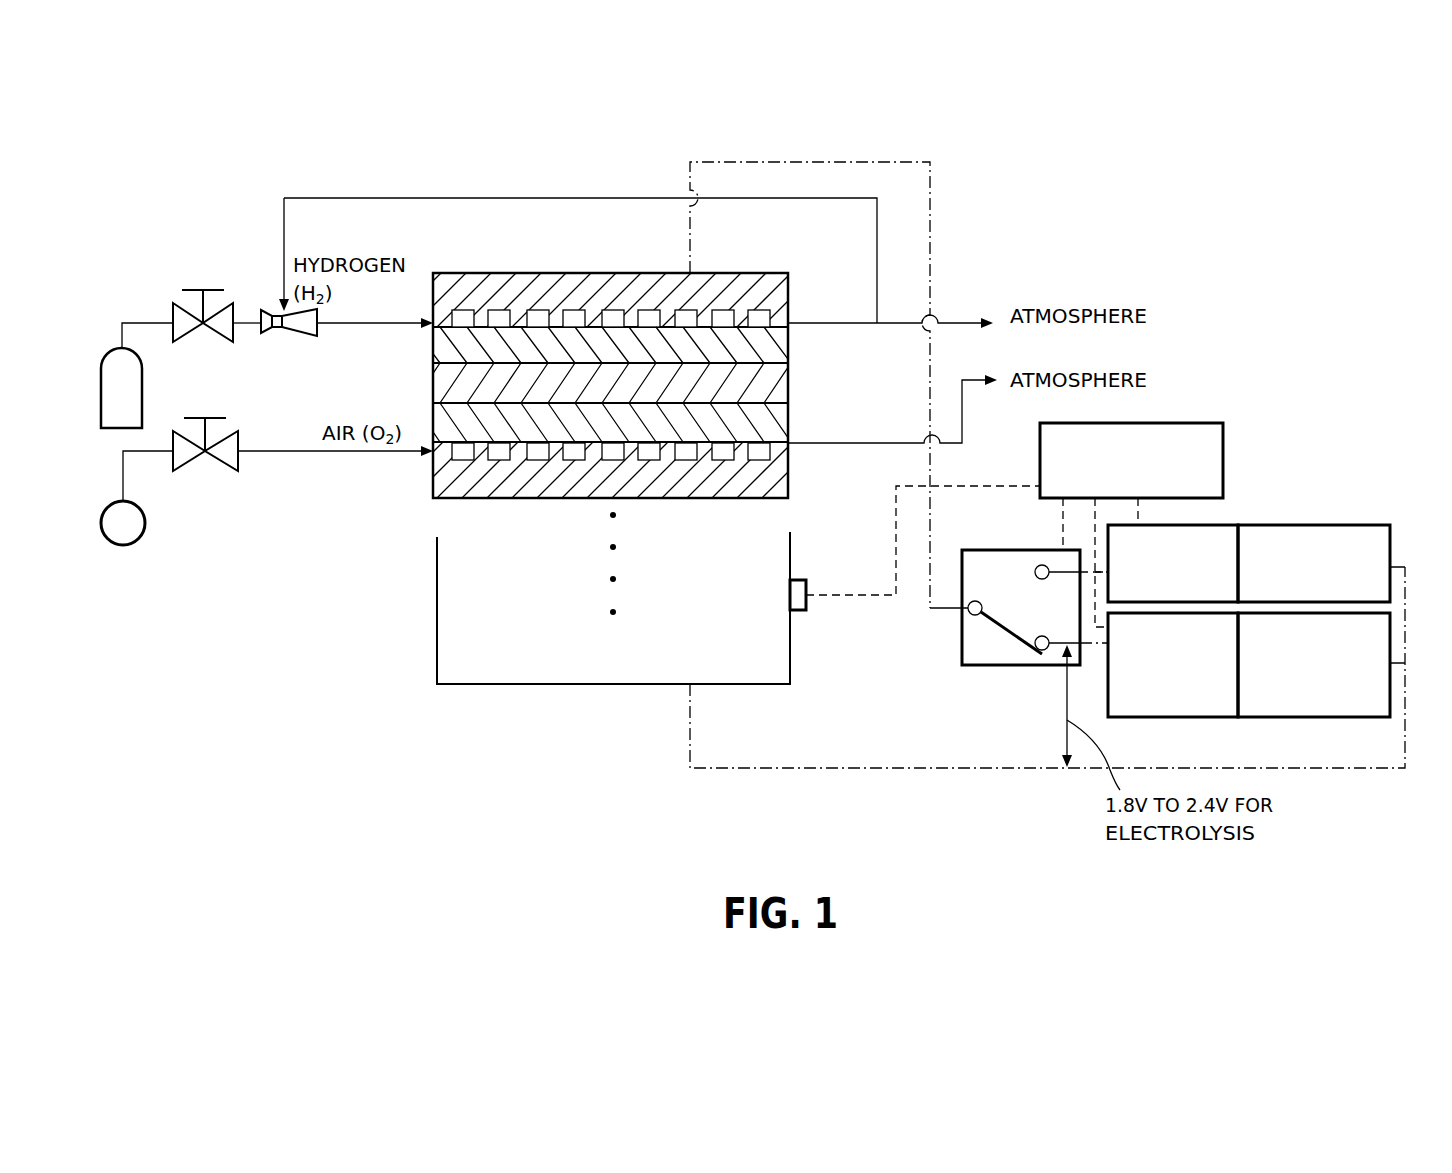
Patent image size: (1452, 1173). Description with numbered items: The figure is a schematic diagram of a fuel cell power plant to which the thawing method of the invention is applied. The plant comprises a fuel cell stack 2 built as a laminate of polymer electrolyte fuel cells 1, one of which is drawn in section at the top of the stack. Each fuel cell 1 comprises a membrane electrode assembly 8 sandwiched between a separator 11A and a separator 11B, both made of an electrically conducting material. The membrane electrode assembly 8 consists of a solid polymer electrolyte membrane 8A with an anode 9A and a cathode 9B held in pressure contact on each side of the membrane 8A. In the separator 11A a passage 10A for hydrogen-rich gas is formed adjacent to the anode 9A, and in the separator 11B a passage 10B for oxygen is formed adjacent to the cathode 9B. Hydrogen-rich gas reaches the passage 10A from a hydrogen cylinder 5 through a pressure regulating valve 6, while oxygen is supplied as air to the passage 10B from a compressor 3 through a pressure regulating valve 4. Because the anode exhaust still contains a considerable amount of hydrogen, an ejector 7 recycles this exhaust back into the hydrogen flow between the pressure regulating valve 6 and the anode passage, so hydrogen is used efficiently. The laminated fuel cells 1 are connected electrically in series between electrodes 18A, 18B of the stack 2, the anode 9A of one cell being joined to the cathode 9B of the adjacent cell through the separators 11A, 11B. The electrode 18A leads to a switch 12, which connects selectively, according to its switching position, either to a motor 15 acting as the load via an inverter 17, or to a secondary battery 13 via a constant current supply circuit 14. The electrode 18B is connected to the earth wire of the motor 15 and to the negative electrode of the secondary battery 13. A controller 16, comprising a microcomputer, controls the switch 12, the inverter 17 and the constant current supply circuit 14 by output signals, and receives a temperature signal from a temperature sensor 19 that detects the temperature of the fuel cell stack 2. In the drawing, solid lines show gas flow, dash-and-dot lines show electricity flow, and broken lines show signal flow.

The polymer electrolyte fuel cell 1 is at (654, 390).
The fuel cell stack 2 is at (432, 688).
The compressor 3 is at (139, 540).
The pressure regulating valve 4 is at (200, 458).
The hydrogen cylinder 5 is at (142, 383).
The pressure regulating valve 6 is at (198, 290).
The ejector 7 is at (264, 310).
The membrane electrode assembly 8 is at (654, 384).
The solid polymer electrolyte membrane 8A is at (789, 383).
The anode 9A is at (789, 345).
The cathode 9B is at (633, 422).
The passage for hydrogen-rich gas 10A is at (762, 310).
The passage for oxygen 10B is at (760, 455).
The separator 11A is at (751, 273).
The separator 11B is at (770, 497).
The switch 12 is at (993, 667).
The secondary battery 13 is at (1280, 611).
The constant current supply circuit 14 is at (1174, 718).
The motor 15 is at (1356, 525).
The controller 16 is at (1194, 423).
The inverter 17 is at (1205, 525).
The electrode 18A is at (692, 220).
The electrode 18B is at (692, 700).
The temperature sensor 19 is at (800, 612).